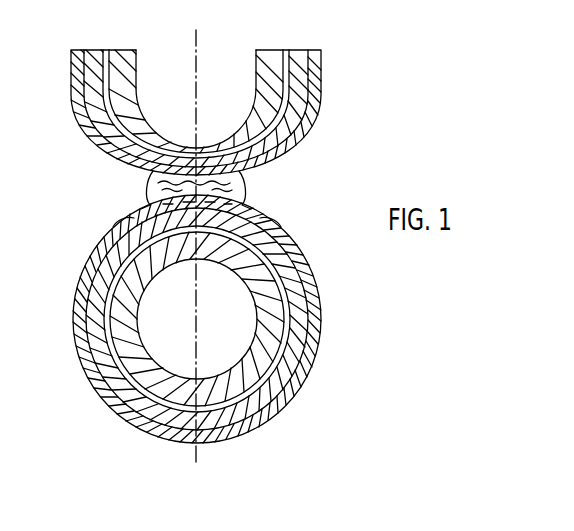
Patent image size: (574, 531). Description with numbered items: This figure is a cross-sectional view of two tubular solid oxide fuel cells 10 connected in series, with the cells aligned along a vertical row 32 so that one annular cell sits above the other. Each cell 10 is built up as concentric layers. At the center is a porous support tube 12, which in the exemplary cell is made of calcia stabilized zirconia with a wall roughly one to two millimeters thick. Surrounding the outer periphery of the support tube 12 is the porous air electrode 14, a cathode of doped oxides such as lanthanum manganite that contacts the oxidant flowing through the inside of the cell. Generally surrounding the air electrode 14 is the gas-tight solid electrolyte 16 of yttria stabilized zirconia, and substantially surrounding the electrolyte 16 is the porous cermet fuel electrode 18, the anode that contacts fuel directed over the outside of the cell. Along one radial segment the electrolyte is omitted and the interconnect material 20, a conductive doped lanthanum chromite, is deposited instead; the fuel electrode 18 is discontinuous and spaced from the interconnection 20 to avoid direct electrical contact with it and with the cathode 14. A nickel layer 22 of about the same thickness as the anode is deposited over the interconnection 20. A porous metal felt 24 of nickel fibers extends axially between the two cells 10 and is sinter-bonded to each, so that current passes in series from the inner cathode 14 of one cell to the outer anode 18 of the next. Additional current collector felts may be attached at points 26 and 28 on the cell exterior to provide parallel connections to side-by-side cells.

The solid oxide fuel cell 10 is at (52, 260).
The porous support tube 12 is at (122, 50).
The air electrode 14 is at (99, 50).
The solid electrolyte 16 is at (91, 50).
The fuel electrode 18 is at (73, 50).
The interconnect material 20 is at (242, 200).
The layer 22 is at (160, 207).
The porous metal felt 24 is at (158, 187).
The point 26 is at (323, 318).
The point 28 is at (73, 320).
The vertical row 32 is at (194, 251).